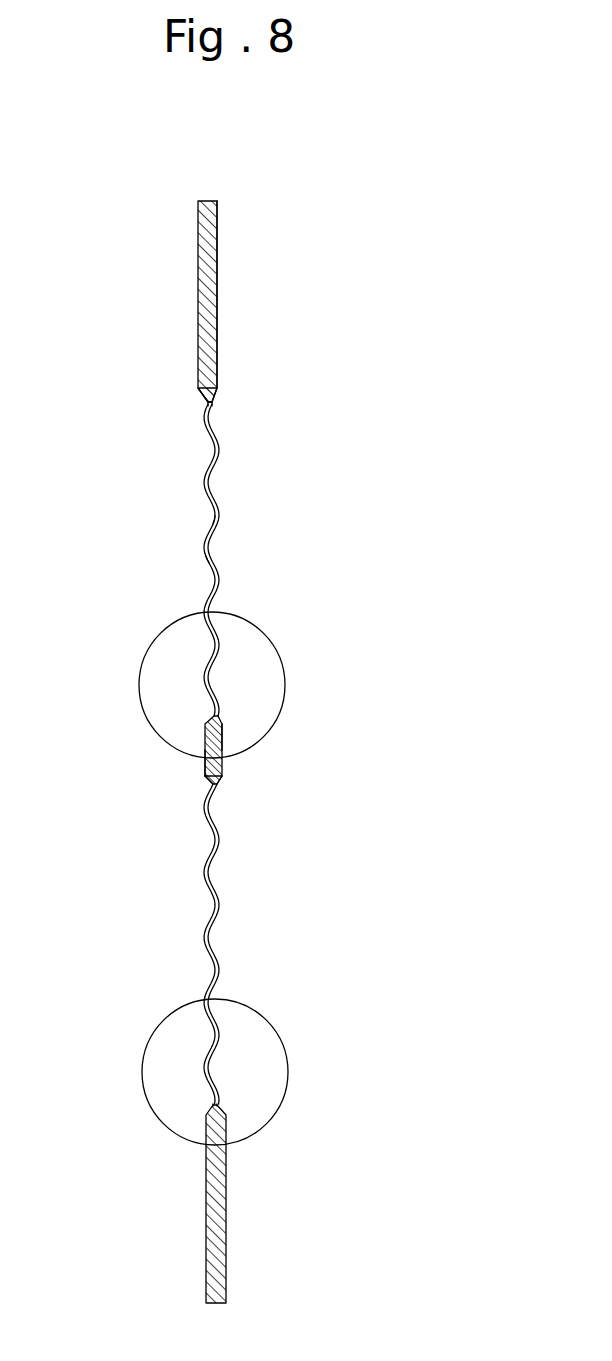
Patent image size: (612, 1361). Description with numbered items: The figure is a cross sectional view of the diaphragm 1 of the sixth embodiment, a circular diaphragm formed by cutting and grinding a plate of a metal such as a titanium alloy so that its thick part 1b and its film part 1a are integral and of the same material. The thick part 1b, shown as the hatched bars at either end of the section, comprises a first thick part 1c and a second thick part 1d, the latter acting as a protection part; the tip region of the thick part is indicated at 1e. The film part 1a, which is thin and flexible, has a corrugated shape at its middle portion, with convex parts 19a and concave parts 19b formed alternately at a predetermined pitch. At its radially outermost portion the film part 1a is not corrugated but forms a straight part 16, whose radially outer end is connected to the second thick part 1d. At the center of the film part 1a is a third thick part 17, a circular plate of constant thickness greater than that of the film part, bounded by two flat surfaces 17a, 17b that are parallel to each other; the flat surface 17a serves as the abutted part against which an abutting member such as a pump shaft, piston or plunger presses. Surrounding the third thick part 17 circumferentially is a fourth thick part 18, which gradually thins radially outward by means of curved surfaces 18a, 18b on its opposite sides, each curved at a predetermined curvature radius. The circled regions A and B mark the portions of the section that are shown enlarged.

The diaphragm 1 is at (288, 197).
The film part 1a is at (231, 519).
The thick part 1b is at (321, 306).
The first thick part 1c is at (217, 298).
The second thick part 1d is at (217, 390).
The tip end of lead terminal 1e is at (205, 398).
The straight part 16 is at (212, 418).
The third thick part 17 is at (222, 750).
The flat surface 17a is at (204, 763).
The flat surface 17b is at (222, 733).
The fourth thick part 18 is at (222, 772).
The curved surface 18a is at (206, 783).
The curved surface 18b is at (220, 784).
The convex part 19a is at (206, 554).
The concave part 19b is at (213, 519).
The enlarged region A is at (254, 1008).
The enlarged region B is at (256, 623).